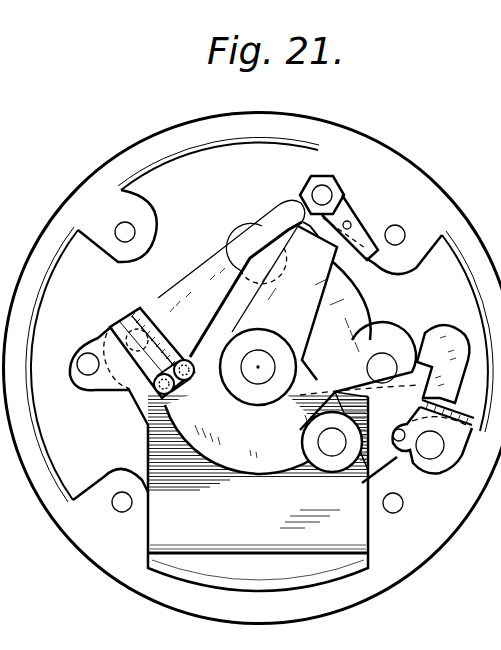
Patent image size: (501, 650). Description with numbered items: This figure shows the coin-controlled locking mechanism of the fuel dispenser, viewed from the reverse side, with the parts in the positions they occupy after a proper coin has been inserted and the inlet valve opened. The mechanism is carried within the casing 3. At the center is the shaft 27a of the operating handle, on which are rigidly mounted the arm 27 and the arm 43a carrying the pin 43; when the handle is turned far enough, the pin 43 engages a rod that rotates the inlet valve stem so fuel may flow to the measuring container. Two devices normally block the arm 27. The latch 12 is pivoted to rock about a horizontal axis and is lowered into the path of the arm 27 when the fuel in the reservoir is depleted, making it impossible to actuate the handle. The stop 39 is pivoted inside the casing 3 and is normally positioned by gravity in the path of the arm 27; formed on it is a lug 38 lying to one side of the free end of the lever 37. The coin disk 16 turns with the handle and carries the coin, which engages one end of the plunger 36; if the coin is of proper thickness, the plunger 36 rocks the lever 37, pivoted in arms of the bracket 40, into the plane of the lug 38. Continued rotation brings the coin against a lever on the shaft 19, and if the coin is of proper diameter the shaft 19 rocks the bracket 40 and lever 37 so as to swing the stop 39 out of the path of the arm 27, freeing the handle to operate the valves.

The casing 3 is at (128, 152).
The latch 12 is at (438, 336).
The coin disk 16 is at (243, 455).
The shaft 19 is at (106, 334).
The arm 27 is at (322, 300).
The shaft of the operating handle 27a is at (258, 370).
The plunger 36 is at (197, 358).
The lever 37 is at (228, 262).
The lug 38 is at (300, 215).
The stop 39 is at (360, 208).
The bracket 40 is at (135, 312).
The pin 43 is at (332, 445).
The arm 43a is at (265, 367).